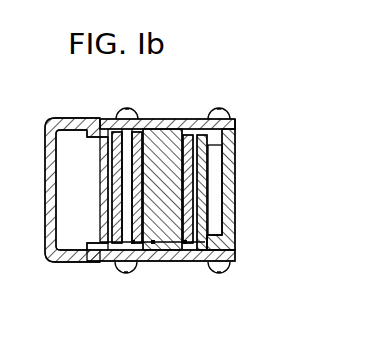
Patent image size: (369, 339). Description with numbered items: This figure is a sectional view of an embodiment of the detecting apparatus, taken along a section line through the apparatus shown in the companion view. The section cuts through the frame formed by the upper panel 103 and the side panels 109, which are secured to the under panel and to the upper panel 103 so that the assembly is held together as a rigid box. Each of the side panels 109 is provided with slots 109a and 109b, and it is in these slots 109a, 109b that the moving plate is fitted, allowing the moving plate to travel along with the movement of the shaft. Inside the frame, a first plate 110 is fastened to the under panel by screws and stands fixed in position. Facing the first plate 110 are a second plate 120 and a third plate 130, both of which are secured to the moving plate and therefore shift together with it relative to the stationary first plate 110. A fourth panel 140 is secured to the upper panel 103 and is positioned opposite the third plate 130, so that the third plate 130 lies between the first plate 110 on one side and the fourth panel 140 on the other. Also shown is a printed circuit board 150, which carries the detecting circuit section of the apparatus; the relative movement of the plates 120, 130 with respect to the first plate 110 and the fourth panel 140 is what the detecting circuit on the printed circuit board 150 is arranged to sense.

The upper panel 103 is at (113, 119).
The side panels 109 is at (232, 121).
The slot 109a is at (152, 262).
The slot 109b is at (178, 119).
The first plate 110 is at (190, 179).
The second plate 120 is at (185, 221).
The third plate 130 is at (166, 242).
The fourth panel 140 is at (113, 257).
The printed circuit board 150 is at (112, 167).